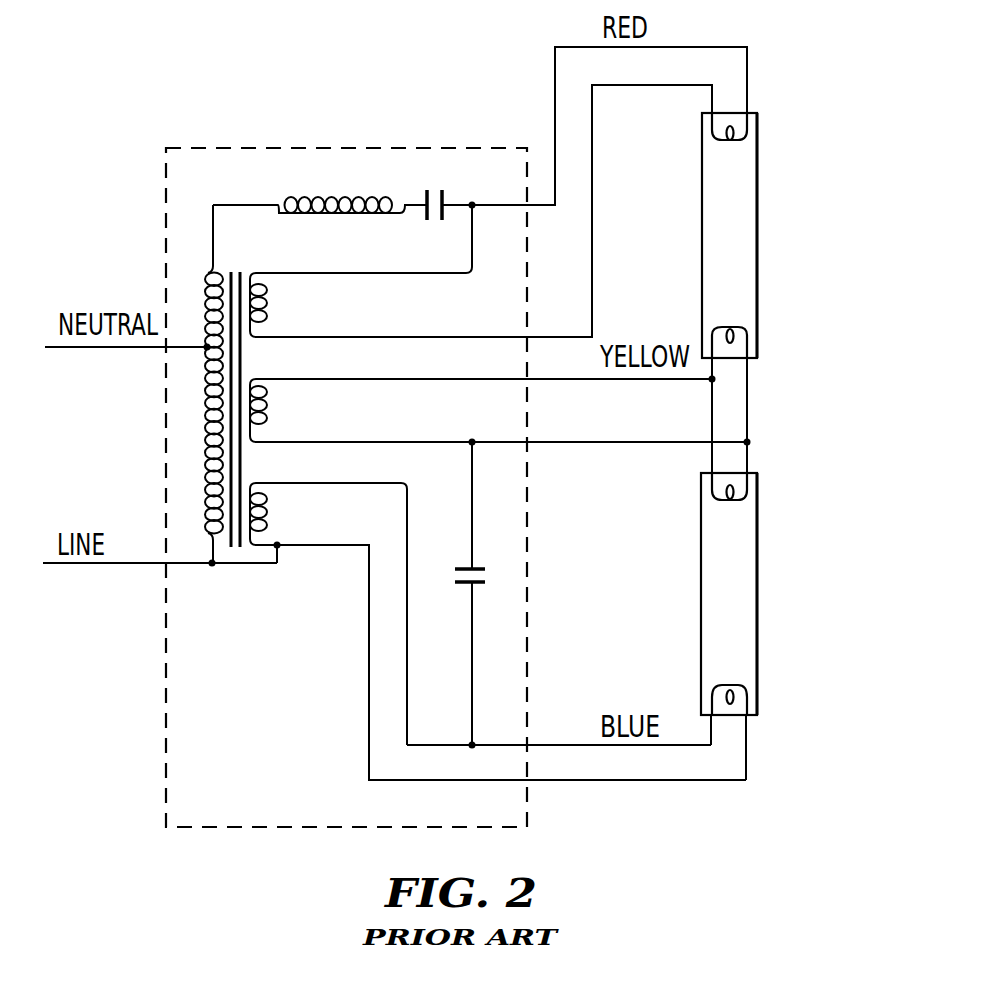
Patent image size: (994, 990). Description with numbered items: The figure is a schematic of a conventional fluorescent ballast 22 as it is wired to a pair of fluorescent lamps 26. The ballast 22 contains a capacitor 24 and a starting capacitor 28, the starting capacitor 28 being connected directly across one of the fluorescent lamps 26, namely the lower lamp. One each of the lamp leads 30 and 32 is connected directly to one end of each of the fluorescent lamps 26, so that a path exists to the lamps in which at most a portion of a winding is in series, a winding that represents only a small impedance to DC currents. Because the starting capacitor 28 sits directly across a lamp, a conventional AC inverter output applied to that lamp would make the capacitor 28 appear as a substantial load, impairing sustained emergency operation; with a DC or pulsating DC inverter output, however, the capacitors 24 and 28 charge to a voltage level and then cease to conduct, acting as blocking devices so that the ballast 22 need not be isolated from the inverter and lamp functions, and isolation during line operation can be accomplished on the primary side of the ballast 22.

The ballast 22 is at (380, 149).
The capacitor 24 is at (425, 220).
The fluorescent lamps 26 is at (732, 254).
The starting capacitor 28 is at (463, 567).
The lamp lead 30 is at (759, 104).
The lamp lead 32 is at (757, 728).